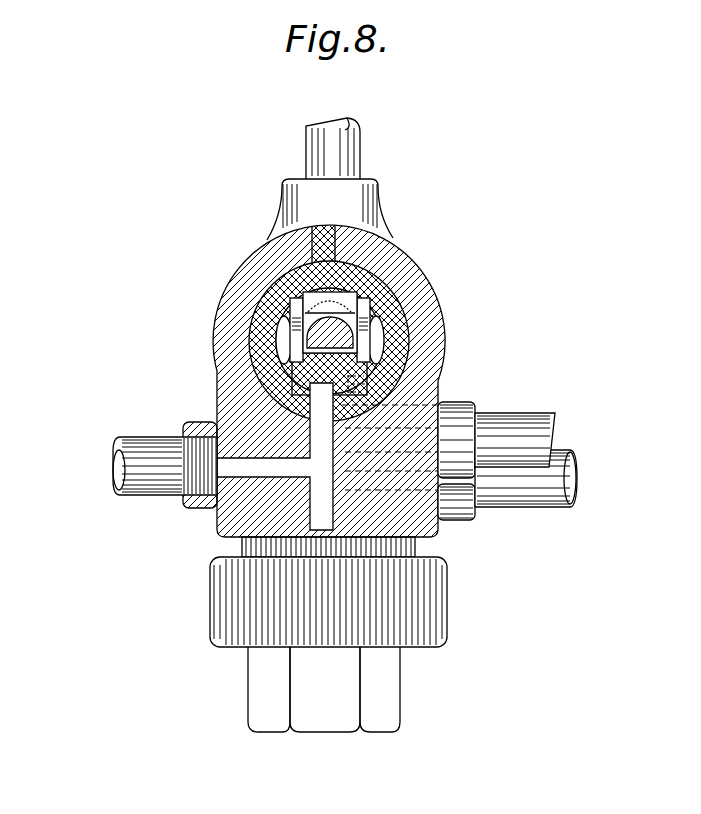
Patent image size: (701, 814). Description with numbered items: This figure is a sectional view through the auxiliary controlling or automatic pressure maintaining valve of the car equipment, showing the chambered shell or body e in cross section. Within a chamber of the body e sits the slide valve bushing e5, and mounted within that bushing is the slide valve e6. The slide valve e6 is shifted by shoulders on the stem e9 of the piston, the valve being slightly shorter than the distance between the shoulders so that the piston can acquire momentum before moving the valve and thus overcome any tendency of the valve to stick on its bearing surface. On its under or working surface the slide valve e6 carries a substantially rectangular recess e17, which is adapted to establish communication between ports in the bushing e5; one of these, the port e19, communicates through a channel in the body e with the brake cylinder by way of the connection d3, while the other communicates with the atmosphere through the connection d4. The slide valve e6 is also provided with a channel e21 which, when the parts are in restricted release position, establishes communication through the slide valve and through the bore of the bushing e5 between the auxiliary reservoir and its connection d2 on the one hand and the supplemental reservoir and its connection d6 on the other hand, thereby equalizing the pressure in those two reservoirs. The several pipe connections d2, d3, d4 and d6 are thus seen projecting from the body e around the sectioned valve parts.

The shell or body e is at (395, 257).
The slide valve bushing e5 is at (377, 281).
The stem e9 is at (337, 320).
The slide valve e6 is at (383, 355).
The channel e21 is at (352, 392).
The recess e17 is at (297, 372).
The port e19 is at (288, 386).
The connection d2 is at (566, 393).
The connection d3 is at (60, 484).
The connection d4 is at (572, 457).
The connection d6 is at (352, 145).